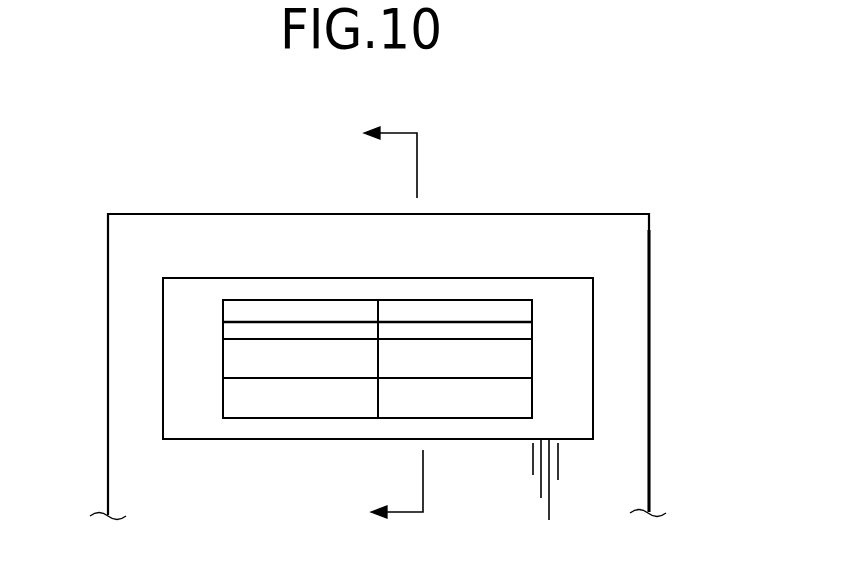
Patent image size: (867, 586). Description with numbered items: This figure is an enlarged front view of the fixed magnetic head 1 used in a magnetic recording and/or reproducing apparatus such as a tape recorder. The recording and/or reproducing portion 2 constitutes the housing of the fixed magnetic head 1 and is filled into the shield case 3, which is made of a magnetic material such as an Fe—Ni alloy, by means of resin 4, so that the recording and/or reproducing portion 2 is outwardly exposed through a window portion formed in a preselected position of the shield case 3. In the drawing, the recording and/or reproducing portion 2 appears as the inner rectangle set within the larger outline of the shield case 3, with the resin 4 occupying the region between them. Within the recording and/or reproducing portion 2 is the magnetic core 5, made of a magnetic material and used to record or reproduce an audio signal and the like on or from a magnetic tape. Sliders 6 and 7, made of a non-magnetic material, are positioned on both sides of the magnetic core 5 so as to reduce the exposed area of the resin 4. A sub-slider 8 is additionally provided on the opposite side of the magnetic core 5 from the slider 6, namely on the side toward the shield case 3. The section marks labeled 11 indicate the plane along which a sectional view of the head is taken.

The fixed magnetic head 1 is at (563, 213).
The recording and/or reproducing portion 2 is at (315, 278).
The shield case 3 is at (181, 230).
The resin 4 is at (216, 427).
The magnetic core 5 is at (510, 358).
The slider 6 is at (510, 330).
The slider 7 is at (512, 396).
The sub-slider 8 is at (512, 311).
The section line XI-XI 11 is at (377, 328).